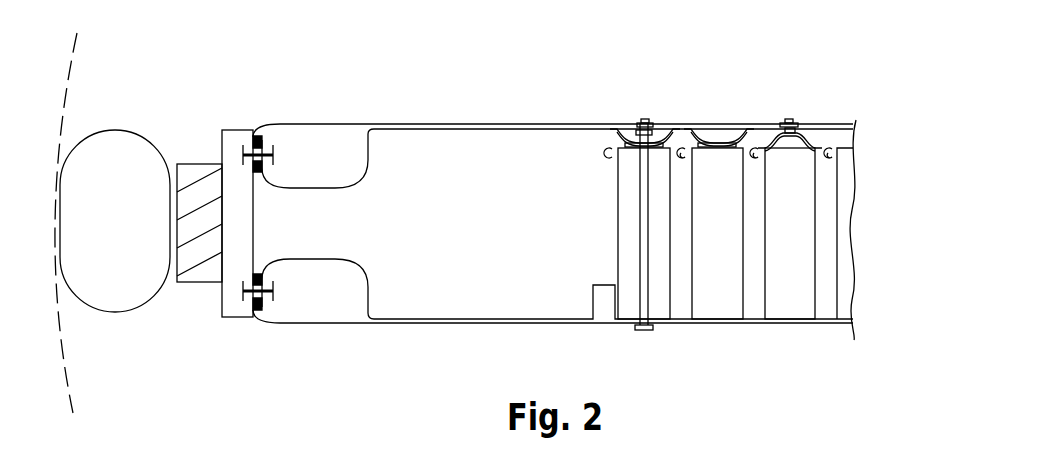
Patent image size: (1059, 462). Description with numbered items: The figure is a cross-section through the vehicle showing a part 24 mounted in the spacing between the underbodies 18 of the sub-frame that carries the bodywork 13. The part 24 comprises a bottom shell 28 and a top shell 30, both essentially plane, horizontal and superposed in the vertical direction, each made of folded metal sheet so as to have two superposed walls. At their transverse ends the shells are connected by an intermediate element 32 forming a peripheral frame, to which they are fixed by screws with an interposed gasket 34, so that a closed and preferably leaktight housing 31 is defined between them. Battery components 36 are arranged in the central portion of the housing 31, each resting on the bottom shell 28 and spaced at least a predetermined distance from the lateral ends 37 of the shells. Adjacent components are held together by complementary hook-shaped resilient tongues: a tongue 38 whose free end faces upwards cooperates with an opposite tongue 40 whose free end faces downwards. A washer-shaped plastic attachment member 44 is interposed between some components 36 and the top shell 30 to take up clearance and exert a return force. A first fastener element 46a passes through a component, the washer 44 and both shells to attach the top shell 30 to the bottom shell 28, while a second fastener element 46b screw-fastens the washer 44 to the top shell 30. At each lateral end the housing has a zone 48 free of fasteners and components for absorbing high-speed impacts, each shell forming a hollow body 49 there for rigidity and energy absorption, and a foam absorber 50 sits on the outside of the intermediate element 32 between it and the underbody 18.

The bodywork 13 is at (68, 72).
The underbody 18 is at (112, 158).
The part 24 is at (553, 206).
The bottom shell 28 is at (472, 323).
The top shell 30 is at (448, 123).
The housing 31 is at (500, 170).
The intermediate element 32 is at (232, 145).
The gasket 34 is at (258, 140).
The battery components 36 is at (780, 302).
The lateral ends 37 is at (221, 238).
The resilient longitudinal tongue 38 is at (680, 150).
The resilient longitudinal tongue 40 is at (602, 157).
The attachment member 44 is at (765, 137).
The first fastener element 46a is at (642, 120).
The second fastener element 46b is at (790, 122).
The zone 48 is at (423, 259).
The hollow body 49 is at (323, 155).
The absorber 50 is at (198, 255).